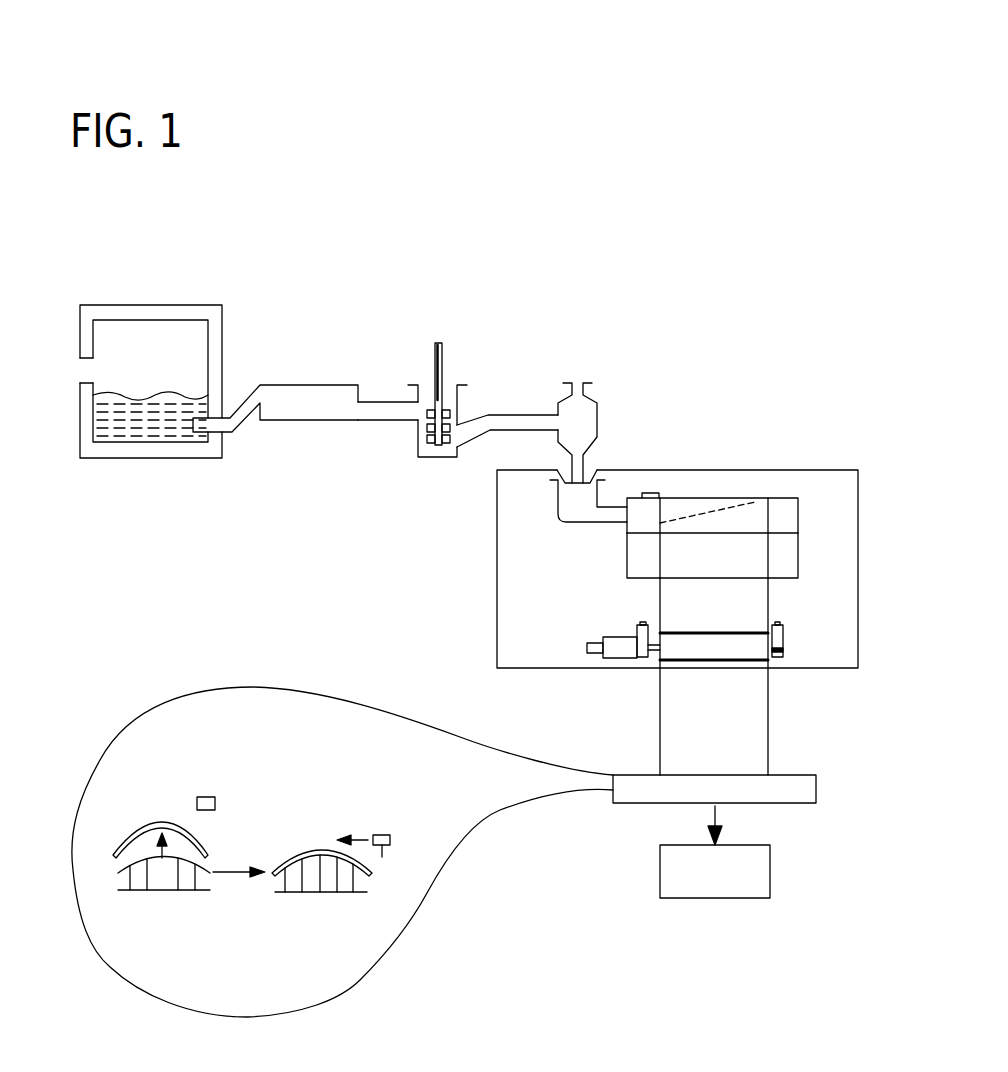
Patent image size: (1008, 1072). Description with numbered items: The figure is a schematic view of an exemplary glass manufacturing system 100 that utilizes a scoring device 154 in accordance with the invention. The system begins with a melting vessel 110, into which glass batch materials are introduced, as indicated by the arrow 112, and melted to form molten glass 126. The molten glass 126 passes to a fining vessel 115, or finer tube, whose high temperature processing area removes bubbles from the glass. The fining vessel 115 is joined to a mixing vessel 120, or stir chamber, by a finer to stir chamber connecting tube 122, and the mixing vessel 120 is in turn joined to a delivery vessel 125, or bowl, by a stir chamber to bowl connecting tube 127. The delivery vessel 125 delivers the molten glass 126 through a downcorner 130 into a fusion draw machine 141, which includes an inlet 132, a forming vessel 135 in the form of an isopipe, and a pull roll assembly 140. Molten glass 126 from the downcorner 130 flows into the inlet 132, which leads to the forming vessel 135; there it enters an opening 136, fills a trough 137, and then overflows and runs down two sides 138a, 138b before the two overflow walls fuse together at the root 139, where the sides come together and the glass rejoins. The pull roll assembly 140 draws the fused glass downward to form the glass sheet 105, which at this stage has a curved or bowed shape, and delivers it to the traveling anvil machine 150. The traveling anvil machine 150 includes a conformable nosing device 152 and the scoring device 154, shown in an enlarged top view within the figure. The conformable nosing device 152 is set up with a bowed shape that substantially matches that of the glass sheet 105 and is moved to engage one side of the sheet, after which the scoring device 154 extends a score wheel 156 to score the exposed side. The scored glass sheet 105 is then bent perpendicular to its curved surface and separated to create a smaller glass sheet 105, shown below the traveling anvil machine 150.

The glass manufacturing system 100 is at (692, 318).
The glass sheet 105 is at (660, 675).
The melting vessel 110 is at (150, 303).
The arrow 112 is at (70, 371).
The fining vessel 115 is at (285, 385).
The mixing vessel 120 is at (457, 398).
The finer to stir chamber connecting tube 122 is at (393, 420).
The delivery vessel 125 is at (597, 415).
The molten glass 126 is at (168, 395).
The stir chamber to bowl connecting tube 127 is at (515, 430).
The downcorner 130 is at (585, 460).
The inlet 132 is at (558, 522).
The forming vessel 135 is at (798, 510).
The opening 136 is at (627, 525).
The trough 137 is at (688, 508).
The first side 138a is at (673, 557).
The second side 138b is at (798, 557).
The root 139 is at (733, 580).
The pull roll assembly 140 is at (783, 640).
The fusion draw machine 141 is at (497, 571).
The traveling anvil machine 150 is at (628, 776).
The conformable nosing device 152 is at (152, 892).
The scoring device 154 is at (208, 797).
The score wheel 156 is at (382, 857).